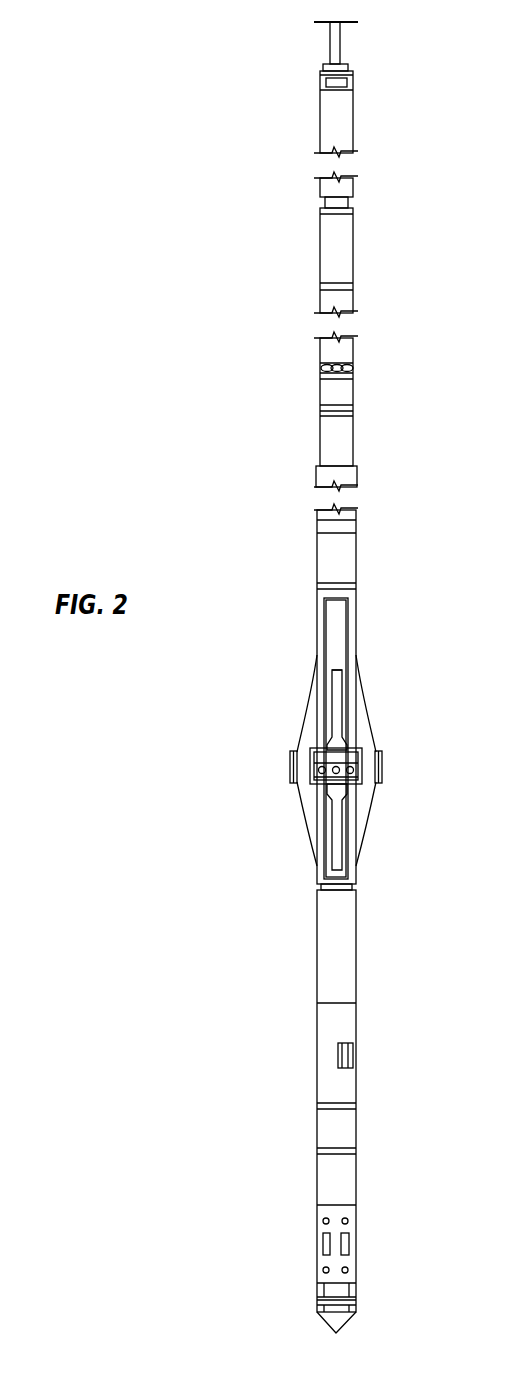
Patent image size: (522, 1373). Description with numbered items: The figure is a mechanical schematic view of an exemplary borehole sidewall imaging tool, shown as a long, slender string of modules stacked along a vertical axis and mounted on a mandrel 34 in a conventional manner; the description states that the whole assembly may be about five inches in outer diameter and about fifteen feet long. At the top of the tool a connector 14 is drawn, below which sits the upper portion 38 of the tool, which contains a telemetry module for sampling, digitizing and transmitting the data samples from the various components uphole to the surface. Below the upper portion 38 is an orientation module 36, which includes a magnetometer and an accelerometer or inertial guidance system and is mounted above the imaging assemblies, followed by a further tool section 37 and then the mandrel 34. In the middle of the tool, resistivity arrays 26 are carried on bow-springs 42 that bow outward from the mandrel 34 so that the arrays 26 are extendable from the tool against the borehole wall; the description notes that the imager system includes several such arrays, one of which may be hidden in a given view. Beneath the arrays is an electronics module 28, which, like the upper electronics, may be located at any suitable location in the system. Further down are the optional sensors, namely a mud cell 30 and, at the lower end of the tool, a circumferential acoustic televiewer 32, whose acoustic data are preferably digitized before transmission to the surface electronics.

The connector / fishing neck 14 is at (340, 51).
The upper portion 38 is at (353, 106).
The orientation module 36 is at (353, 260).
The tool section with coupling 37 is at (353, 389).
The mandrel 34 is at (356, 563).
The bow-springs 42 is at (303, 700).
The resistivity arrays 26 is at (290, 758).
The electronics module 28 is at (356, 945).
The mud cell 30 is at (353, 1056).
The circumferential acoustic televiewer 32 is at (356, 1245).